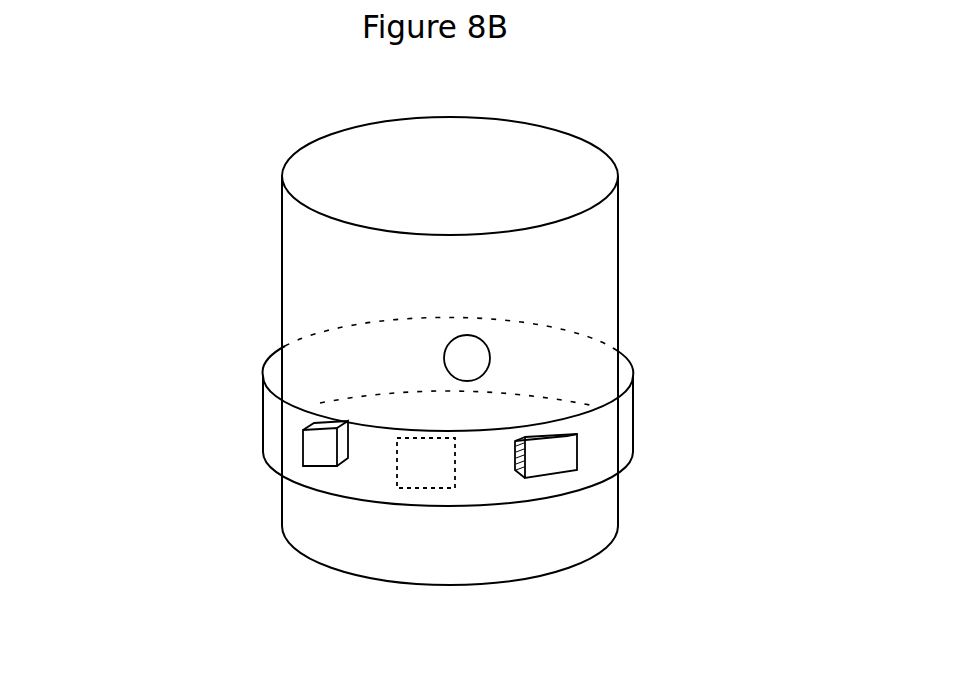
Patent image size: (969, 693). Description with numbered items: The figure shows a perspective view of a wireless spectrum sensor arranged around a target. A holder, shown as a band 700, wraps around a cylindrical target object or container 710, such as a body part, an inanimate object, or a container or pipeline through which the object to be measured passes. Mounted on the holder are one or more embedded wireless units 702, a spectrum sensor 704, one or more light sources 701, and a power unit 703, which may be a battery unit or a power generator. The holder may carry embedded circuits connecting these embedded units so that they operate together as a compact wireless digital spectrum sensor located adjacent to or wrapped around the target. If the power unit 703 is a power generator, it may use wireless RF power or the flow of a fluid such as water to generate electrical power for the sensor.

The collar band 700 is at (263, 371).
The light source 701 is at (473, 360).
The embedded wireless unit 702 is at (332, 454).
The power unit 703 is at (555, 465).
The spectrum sensor 704 is at (425, 467).
The cylindrical body 710 is at (578, 547).